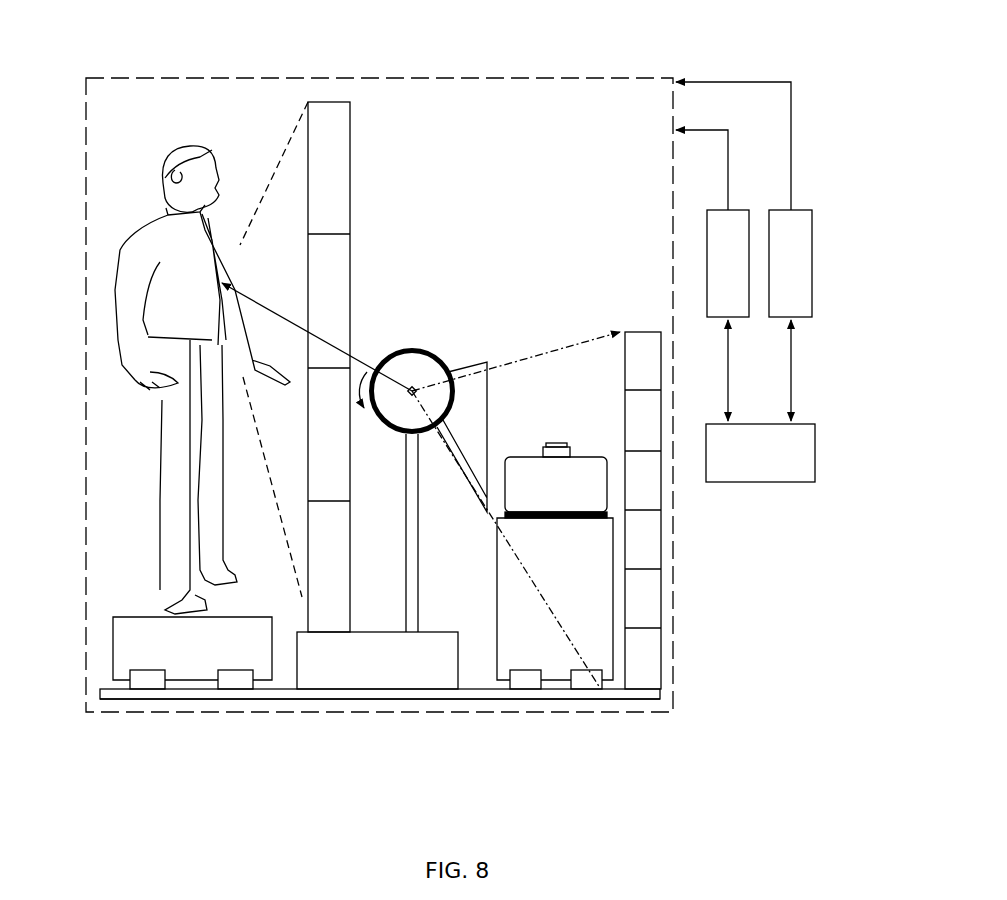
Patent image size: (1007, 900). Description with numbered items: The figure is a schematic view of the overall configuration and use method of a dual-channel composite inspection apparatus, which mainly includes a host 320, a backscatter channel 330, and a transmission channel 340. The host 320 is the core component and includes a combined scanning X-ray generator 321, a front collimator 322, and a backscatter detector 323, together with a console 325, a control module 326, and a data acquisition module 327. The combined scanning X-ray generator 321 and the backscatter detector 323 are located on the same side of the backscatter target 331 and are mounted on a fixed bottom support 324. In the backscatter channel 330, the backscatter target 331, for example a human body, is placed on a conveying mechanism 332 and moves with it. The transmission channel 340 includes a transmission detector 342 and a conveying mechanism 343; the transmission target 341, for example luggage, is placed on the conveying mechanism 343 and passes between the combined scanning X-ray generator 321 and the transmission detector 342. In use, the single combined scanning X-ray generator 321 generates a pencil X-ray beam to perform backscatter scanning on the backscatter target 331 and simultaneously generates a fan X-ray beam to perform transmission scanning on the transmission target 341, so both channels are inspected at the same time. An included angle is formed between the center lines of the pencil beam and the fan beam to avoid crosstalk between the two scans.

The host 320 is at (382, 703).
The combined scanning X-ray generator 321 is at (402, 352).
The front collimator 322 is at (470, 368).
The backscatter detector 323 is at (302, 600).
The fixed bottom support 324 is at (368, 675).
The console 325 is at (815, 432).
The control module 326 is at (812, 218).
The data acquisition module 327 is at (740, 210).
The backscatter channel 330 is at (182, 703).
The backscatter target 331 is at (185, 468).
The conveying mechanism 332 is at (143, 647).
The transmission channel 340 is at (557, 703).
The transmission target 341 is at (607, 512).
The transmission detector 342 is at (655, 653).
The conveying mechanism 343 is at (598, 692).